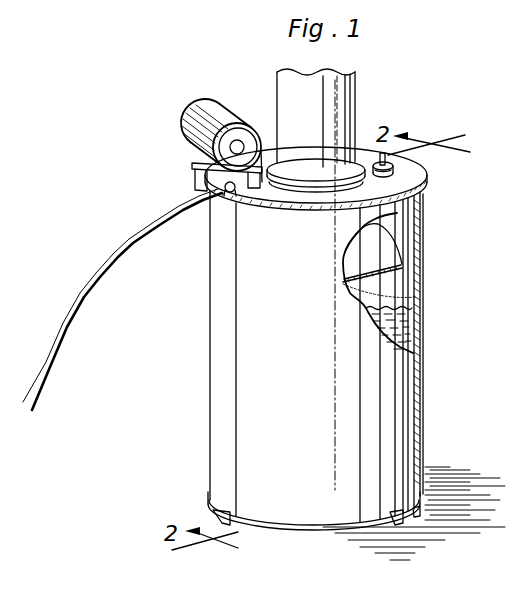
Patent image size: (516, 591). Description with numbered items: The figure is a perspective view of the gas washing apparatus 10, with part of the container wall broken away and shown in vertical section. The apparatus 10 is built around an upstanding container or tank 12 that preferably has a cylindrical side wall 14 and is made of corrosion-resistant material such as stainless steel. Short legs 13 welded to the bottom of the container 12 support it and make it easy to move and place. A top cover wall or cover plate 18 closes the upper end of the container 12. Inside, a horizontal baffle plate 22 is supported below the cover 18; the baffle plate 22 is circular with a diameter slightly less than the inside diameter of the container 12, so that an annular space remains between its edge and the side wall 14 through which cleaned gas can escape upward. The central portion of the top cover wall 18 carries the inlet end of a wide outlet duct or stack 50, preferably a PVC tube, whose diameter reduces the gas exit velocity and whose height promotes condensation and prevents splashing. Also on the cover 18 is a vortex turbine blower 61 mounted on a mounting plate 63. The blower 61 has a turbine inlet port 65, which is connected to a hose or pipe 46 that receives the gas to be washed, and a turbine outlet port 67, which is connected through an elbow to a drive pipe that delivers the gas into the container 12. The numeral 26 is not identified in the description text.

The gas washing apparatus 10 is at (433, 229).
The container 12 is at (423, 333).
The legs 13 is at (231, 516).
The cylindrical side wall 14 is at (422, 452).
The top cover wall 18 is at (405, 182).
The baffle plate 22 is at (402, 268).
The container body 26 is at (314, 305).
The pipe 46 is at (48, 386).
The outlet stack 50 is at (343, 105).
The vortex turbine blower 61 is at (213, 113).
The mounting plate 63 is at (195, 166).
The turbine inlet port 65 is at (231, 195).
The turbine outlet port 67 is at (261, 150).